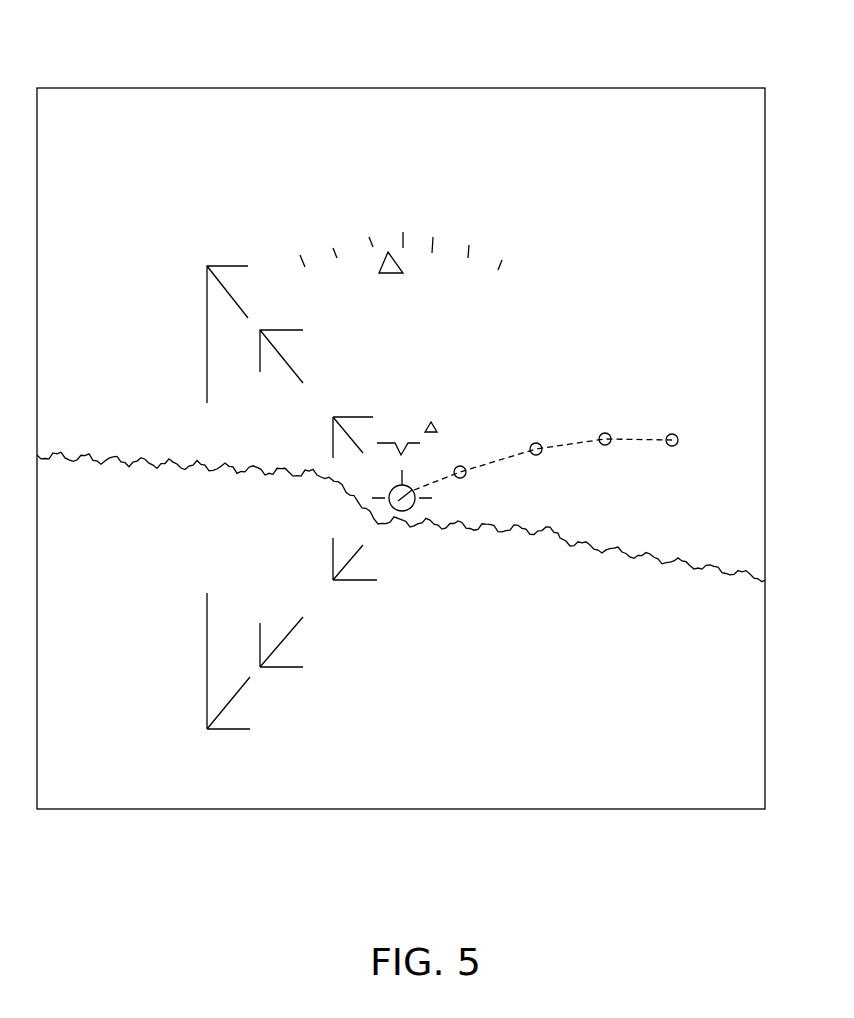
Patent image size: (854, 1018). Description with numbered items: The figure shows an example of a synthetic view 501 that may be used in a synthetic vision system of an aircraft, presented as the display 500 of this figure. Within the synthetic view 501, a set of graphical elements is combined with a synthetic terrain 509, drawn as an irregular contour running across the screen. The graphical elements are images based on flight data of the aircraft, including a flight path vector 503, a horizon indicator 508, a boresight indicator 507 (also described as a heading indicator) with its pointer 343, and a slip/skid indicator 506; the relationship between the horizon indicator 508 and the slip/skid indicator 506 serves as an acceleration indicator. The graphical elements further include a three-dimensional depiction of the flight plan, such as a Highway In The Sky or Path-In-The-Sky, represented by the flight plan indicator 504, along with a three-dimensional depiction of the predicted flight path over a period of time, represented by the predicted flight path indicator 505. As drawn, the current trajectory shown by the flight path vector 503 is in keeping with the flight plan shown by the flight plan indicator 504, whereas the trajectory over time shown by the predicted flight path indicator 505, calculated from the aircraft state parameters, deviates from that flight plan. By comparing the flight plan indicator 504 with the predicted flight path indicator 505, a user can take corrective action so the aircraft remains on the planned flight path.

The display screen view 500 is at (232, 52).
The synthetic view 501 is at (656, 88).
The flight path vector 503 is at (392, 489).
The flight plan indicator 504 is at (212, 266).
The predicted flight path indicator 505 is at (645, 440).
The slip/skid indicator 506 is at (437, 428).
The boresight indicator 507 is at (378, 264).
The horizon indicator 508 is at (420, 441).
The synthetic terrain 509 is at (560, 532).
The heading pointer triangle 343 is at (396, 278).